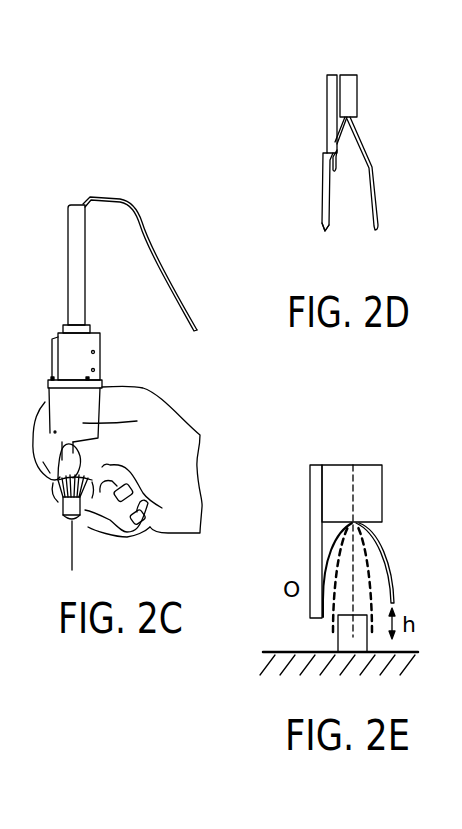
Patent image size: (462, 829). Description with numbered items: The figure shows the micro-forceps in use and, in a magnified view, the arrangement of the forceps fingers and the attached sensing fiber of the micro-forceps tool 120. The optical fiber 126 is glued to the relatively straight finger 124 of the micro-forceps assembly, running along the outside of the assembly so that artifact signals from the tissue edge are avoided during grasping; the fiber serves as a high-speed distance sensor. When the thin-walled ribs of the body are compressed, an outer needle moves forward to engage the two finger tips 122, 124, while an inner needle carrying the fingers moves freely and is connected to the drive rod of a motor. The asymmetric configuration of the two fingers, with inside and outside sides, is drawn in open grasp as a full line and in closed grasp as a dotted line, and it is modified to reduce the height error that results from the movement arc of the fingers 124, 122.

The brush tool assembly 120 is at (353, 164).
The finger tip 122 is at (378, 185).
The finger 124 is at (332, 228).
The optical fiber 126 is at (327, 110).